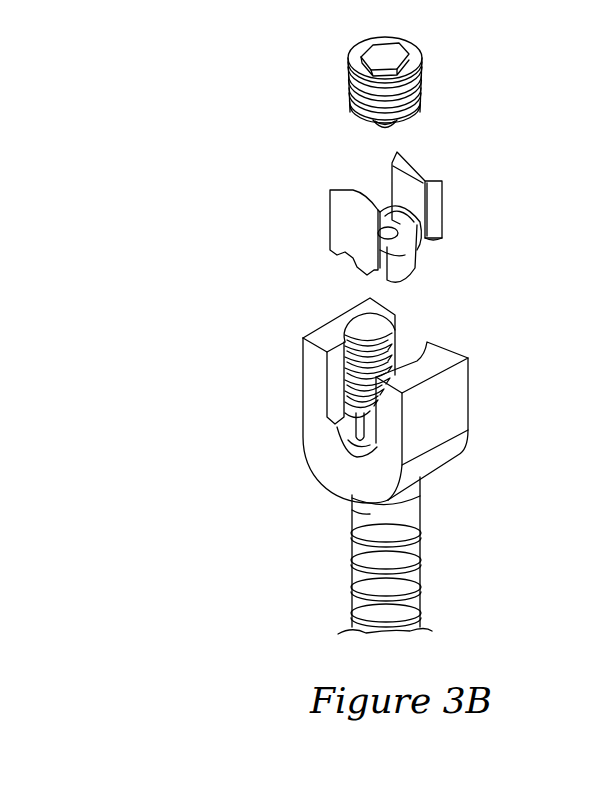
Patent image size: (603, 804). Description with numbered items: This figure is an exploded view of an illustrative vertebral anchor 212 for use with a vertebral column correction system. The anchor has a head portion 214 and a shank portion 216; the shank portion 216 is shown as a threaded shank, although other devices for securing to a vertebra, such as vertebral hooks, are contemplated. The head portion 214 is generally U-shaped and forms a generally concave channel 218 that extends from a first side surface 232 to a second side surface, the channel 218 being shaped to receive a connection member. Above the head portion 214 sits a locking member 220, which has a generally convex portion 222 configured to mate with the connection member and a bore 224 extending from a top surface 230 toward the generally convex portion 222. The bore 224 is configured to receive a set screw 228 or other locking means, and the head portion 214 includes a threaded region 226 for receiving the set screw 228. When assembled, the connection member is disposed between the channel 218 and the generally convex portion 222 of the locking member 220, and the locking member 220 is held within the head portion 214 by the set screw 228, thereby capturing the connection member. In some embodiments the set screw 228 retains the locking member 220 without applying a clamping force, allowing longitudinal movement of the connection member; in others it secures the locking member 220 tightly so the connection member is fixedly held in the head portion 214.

The vertebral anchor 212 is at (359, 466).
The head portion 214 is at (388, 400).
The shank portion 216 is at (438, 563).
The channel 218 is at (362, 442).
The locking member 220 is at (434, 216).
The generally convex portion 222 is at (387, 277).
The bore 224 is at (374, 190).
The threaded region 226 is at (395, 337).
The set screw 228 is at (420, 80).
The top surface 230 is at (425, 176).
The first side surface 232 is at (315, 385).